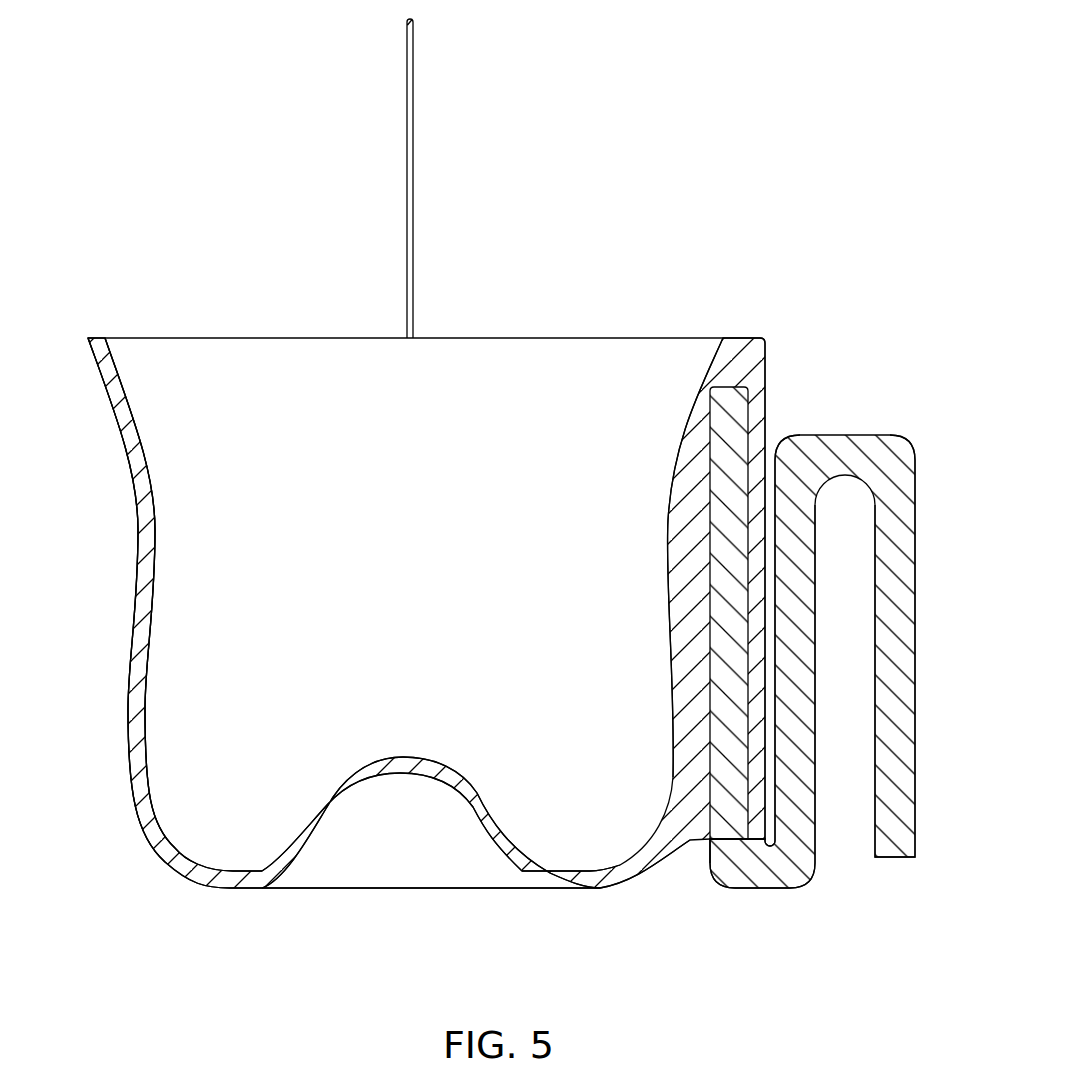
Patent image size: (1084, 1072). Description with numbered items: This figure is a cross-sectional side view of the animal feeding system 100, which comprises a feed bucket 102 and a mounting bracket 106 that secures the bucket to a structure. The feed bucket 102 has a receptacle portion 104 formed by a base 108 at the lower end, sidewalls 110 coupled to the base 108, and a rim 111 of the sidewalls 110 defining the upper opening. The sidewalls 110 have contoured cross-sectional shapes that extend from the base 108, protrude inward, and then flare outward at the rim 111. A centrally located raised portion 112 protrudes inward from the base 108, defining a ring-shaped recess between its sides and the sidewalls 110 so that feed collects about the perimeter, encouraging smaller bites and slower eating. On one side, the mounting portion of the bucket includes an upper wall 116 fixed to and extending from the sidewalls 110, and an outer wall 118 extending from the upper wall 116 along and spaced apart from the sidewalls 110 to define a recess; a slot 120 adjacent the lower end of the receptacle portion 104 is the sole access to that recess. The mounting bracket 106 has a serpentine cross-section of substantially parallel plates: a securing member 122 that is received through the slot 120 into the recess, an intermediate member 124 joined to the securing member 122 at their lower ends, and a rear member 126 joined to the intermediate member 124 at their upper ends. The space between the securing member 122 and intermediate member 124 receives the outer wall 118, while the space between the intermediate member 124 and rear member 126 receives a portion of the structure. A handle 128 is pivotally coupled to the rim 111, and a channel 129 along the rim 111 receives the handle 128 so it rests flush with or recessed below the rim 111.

The animal feeding system 100 is at (193, 155).
The feed bucket 102 is at (148, 841).
The receptacle portion 104 is at (132, 474).
The mounting bracket 106 is at (811, 681).
The base 108 is at (383, 890).
The sidewalls 110 is at (148, 600).
The rim 111 is at (271, 337).
The raised portion 112 is at (424, 756).
The upper wall 116 is at (745, 337).
The outer wall 118 is at (768, 398).
The slot 120 is at (724, 822).
The securing member 122 is at (731, 810).
The intermediate member 124 is at (808, 825).
The rear member 126 is at (896, 436).
The handle 128 is at (414, 50).
The channel 129 is at (88, 338).